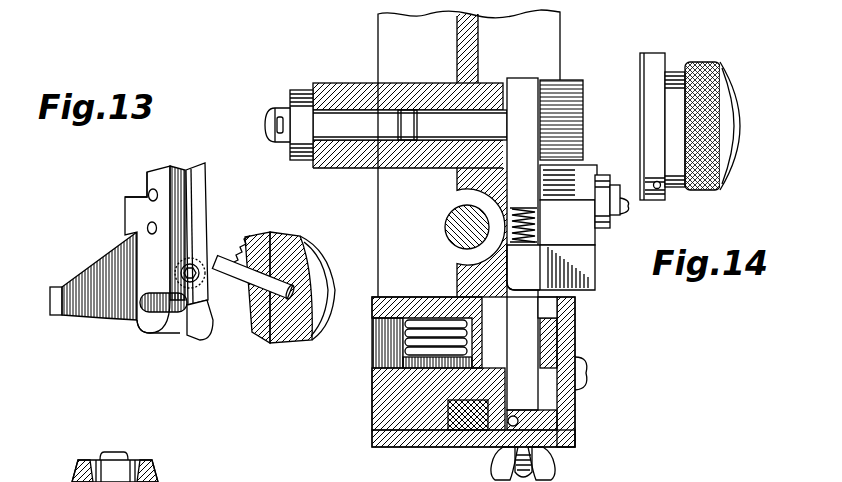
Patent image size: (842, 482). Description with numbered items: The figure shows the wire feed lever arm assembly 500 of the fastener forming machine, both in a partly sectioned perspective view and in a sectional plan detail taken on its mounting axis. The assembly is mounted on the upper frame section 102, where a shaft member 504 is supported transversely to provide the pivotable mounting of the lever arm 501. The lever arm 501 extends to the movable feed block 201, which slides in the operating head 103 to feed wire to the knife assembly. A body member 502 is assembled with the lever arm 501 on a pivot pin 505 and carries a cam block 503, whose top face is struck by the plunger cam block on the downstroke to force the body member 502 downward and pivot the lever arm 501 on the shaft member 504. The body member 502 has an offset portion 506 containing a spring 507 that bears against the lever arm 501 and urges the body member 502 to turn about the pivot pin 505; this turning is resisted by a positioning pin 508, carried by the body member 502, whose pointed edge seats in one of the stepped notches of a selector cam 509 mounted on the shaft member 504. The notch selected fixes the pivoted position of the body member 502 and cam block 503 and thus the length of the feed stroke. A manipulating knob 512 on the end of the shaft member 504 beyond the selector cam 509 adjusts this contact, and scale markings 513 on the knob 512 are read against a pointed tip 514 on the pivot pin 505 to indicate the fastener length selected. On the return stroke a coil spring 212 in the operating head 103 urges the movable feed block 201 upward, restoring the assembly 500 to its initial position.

In FIG. 14, the upper frame section 102 is at (457, 84).
In FIG. 14, the operating head 103 is at (578, 392).
In FIG. 14, the movable feed block 201 is at (575, 418).
In FIG. 14, the coil spring 212 is at (437, 322).
In FIG. 13, the lever arm assembly 500 is at (148, 330).
In FIG. 14, the lever arm assembly 500 is at (738, 121).
In FIG. 13, the lever arm 501 is at (105, 305).
In FIG. 14, the lever arm 501 is at (520, 92).
In FIG. 13, the body member 502 is at (150, 245).
In FIG. 14, the body member 502 is at (583, 268).
In FIG. 13, the cam block 503 is at (199, 173).
In FIG. 14, the cam block 503 is at (580, 233).
In FIG. 13, the shaft member 504 is at (268, 333).
In FIG. 14, the shaft member 504 is at (373, 120).
In FIG. 13, the pivot pin 505 is at (203, 300).
In FIG. 14, the pivot pin 505 is at (612, 208).
In FIG. 13, the offset portion 506 is at (130, 212).
In FIG. 14, the offset portion 506 is at (590, 290).
In FIG. 14, the spring 507 is at (510, 222).
In FIG. 13, the positioning pin 508 is at (260, 300).
In FIG. 13, the selector cam 509 is at (237, 247).
In FIG. 14, the selector cam 509 is at (565, 95).
In FIG. 13, the manipulating knob 512 is at (322, 265).
In FIG. 14, the manipulating knob 512 is at (728, 167).
In FIG. 14, the scale markings 513 is at (660, 190).
In FIG. 13, the pointed tip 514 is at (193, 290).
In FIG. 14, the pointed tip 514 is at (648, 208).